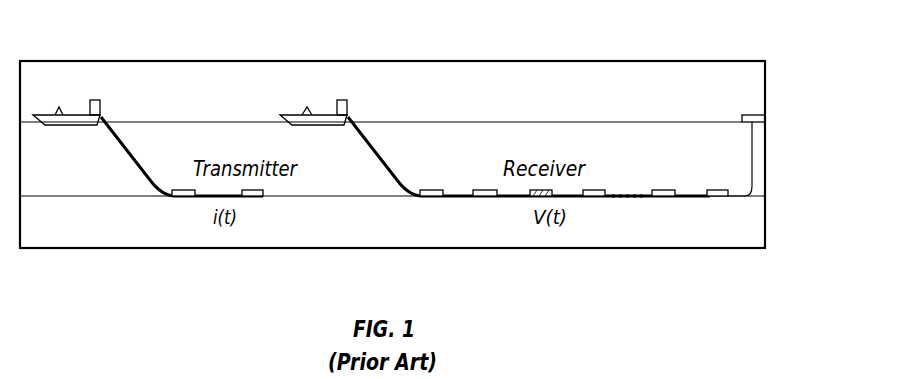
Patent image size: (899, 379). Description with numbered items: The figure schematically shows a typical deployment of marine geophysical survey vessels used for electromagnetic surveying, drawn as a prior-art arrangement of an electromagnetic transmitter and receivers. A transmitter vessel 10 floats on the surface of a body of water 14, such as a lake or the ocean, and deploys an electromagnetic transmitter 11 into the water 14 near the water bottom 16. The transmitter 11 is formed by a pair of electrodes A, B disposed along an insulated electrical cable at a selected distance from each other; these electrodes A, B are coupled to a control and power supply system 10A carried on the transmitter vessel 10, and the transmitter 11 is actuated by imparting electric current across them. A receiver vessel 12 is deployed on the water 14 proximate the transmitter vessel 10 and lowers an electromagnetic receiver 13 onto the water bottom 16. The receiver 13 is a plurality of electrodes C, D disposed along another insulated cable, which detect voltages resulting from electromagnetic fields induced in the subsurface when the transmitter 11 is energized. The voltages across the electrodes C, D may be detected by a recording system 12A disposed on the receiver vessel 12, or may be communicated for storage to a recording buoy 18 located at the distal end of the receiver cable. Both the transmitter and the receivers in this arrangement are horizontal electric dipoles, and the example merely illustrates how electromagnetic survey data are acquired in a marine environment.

The transmitter vessel 10 is at (100, 74).
The control and power supply system 10A is at (101, 108).
The electromagnetic transmitter 11 is at (182, 203).
The receiver vessel 12 is at (332, 74).
The recording system 12A is at (348, 108).
The electromagnetic receiver 13 is at (550, 204).
The body of water 14 is at (422, 123).
The water bottom 16 is at (300, 195).
The recording buoy 18 is at (742, 116).
The transmitter electrode A is at (183, 196).
The transmitter electrode B is at (252, 196).
The receiver electrode C is at (432, 196).
The receiver electrode D is at (485, 196).